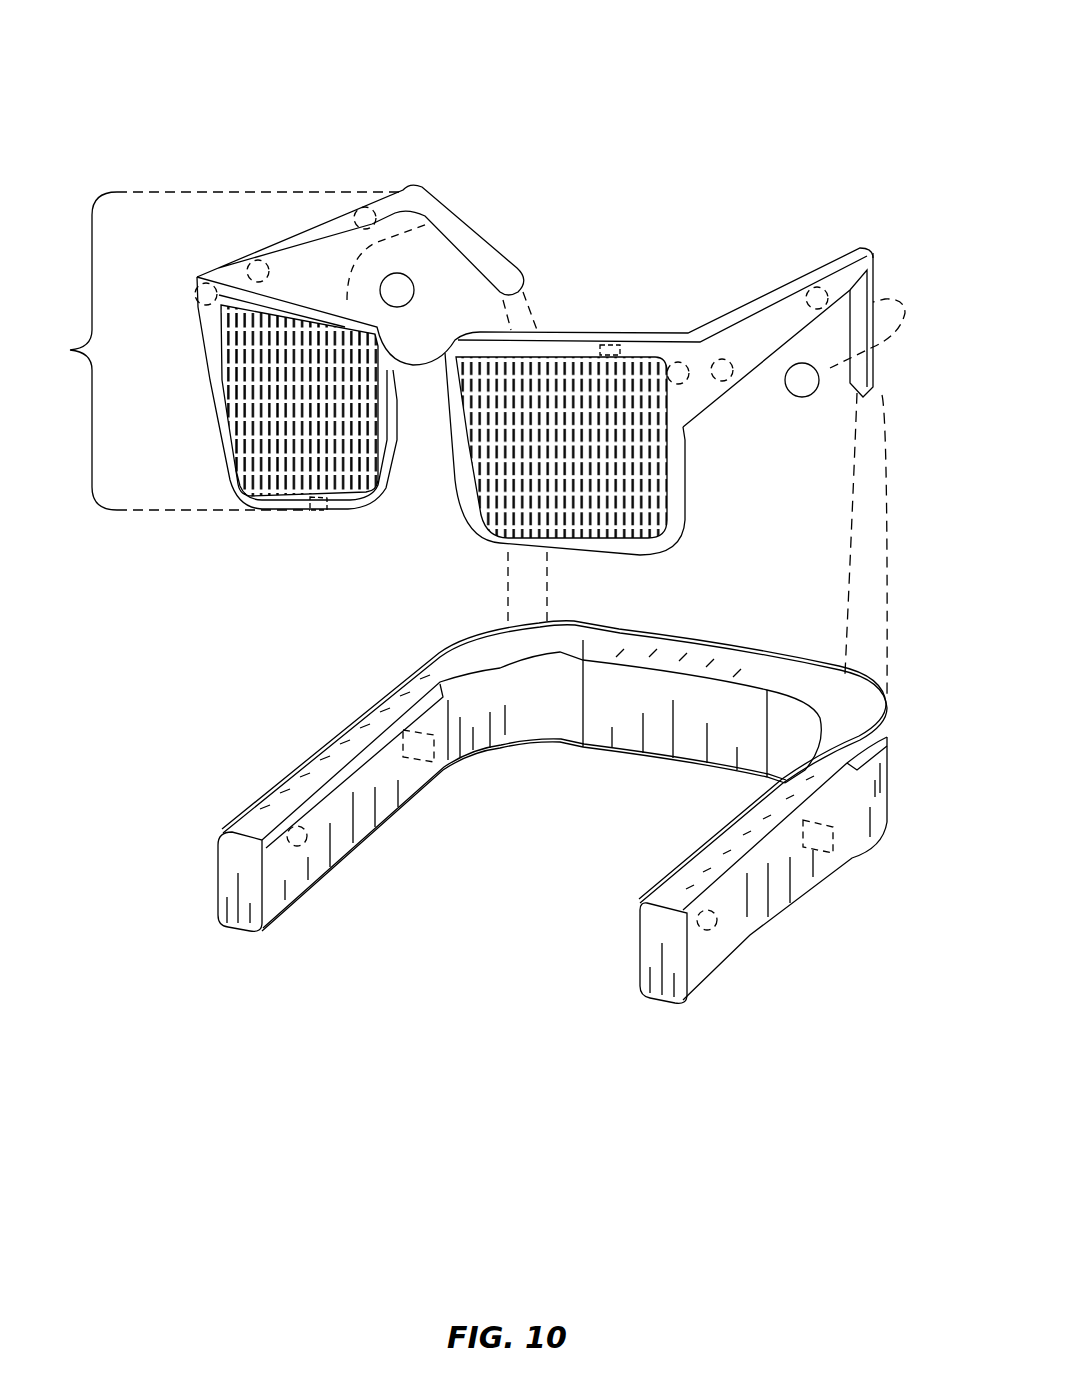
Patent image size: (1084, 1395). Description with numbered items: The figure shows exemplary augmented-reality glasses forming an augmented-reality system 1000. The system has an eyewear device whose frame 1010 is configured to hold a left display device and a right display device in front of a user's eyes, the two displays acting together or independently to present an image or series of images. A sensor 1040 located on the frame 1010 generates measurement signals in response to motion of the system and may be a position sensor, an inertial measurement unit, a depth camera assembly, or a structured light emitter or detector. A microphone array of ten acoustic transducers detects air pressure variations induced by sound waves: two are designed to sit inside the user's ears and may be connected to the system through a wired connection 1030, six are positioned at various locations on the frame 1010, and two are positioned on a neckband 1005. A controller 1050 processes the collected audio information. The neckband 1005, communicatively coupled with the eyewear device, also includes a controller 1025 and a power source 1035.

The augmented-reality system 1000 is at (115, 75).
The neckband 1005 is at (683, 1008).
The frame 1010 is at (412, 186).
The controller 1025 is at (808, 848).
The wired connection 1030 is at (873, 566).
The power source 1035 is at (423, 752).
The sensor 1040 is at (311, 506).
The controller 1050 is at (606, 347).